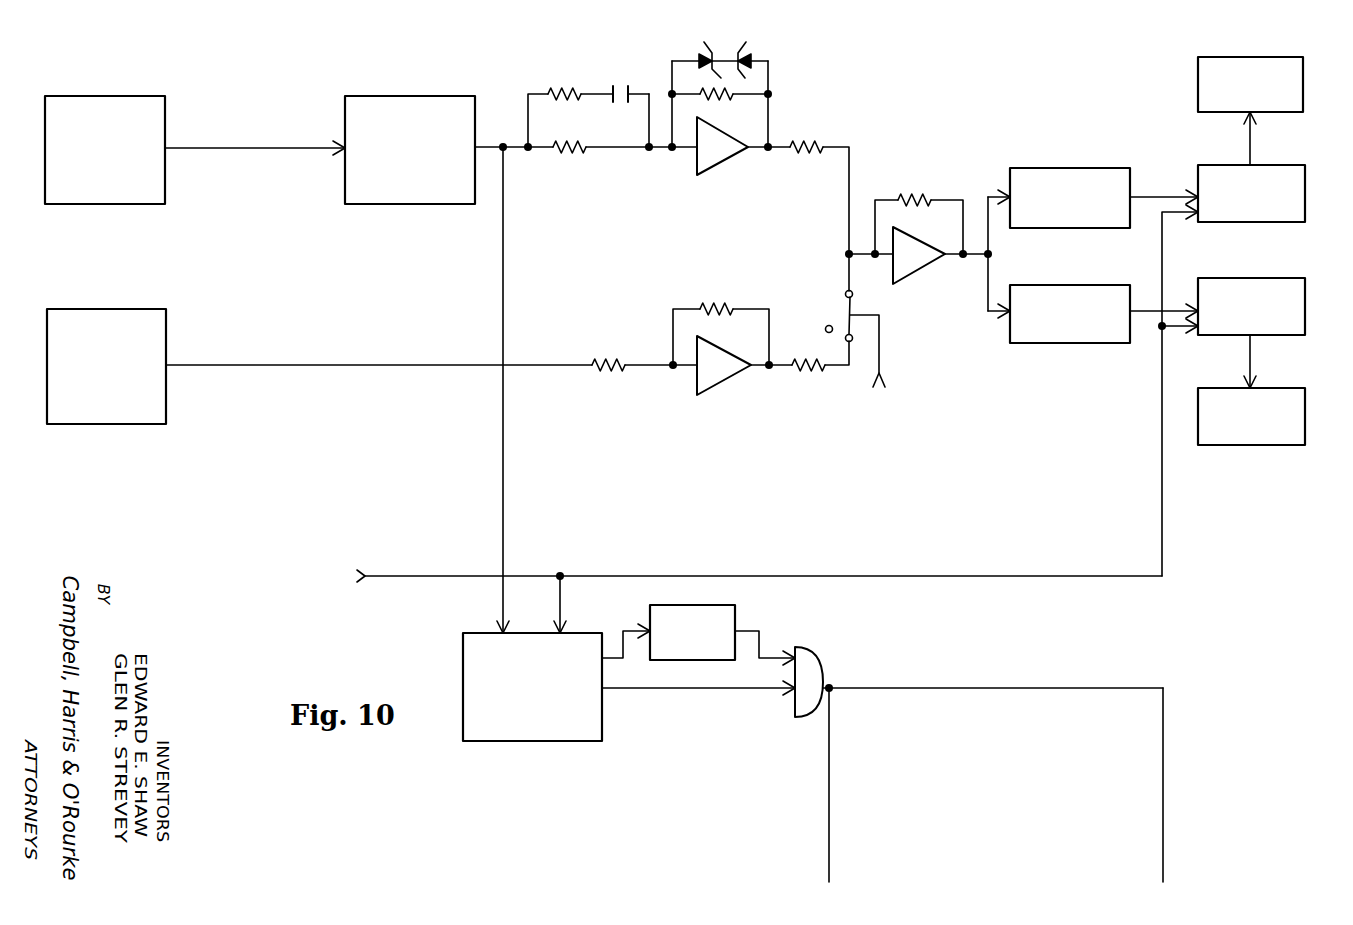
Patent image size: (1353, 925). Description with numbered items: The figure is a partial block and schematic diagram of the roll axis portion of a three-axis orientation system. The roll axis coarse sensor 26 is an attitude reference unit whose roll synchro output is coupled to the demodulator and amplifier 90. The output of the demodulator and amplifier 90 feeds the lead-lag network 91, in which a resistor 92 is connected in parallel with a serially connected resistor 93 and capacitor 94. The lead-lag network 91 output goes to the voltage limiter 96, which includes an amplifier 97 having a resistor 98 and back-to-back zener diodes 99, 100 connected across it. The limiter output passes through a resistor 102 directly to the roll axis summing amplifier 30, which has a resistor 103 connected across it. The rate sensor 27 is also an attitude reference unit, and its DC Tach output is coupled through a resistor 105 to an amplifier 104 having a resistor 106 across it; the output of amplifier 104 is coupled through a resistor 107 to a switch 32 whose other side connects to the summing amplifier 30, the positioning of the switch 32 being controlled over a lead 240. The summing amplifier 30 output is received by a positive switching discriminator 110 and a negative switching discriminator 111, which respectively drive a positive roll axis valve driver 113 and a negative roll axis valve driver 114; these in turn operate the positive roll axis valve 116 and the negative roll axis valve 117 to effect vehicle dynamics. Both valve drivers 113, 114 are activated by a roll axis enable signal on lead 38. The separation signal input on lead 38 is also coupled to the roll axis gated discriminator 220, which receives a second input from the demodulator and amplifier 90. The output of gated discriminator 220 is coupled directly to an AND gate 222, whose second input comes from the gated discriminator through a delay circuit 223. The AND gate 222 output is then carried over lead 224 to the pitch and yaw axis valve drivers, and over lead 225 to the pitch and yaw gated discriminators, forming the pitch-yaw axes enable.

The roll axis coarse sensor 26 is at (152, 93).
The rate sensor 27 is at (152, 307).
The demodulator and amplifier 90 is at (472, 93).
The lead-lag network 91 is at (594, 90).
The resistor 92 is at (566, 156).
The resistor 93 is at (554, 87).
The capacitor 94 is at (627, 87).
The voltage limiter 96 is at (719, 41).
The amplifier 97 is at (740, 152).
The resistor 98 is at (715, 101).
The zener diode 99 is at (703, 44).
The zener diode 100 is at (729, 10).
The resistor 102 is at (790, 140).
The resistor 103 is at (930, 195).
The roll axis summing amplifier 30 is at (940, 262).
The switch 32 is at (838, 319).
The lead 240 is at (886, 366).
The amplifier 104 is at (738, 382).
The resistor 105 is at (636, 326).
The resistor 106 is at (742, 287).
The resistor 107 is at (800, 372).
The positive switching discriminator 110 is at (1098, 145).
The negative switching discriminator 111 is at (1103, 263).
The positive roll axis valve driver 113 is at (1219, 162).
The negative roll axis valve driver 114 is at (1234, 274).
The positive roll axis valve 116 is at (1197, 80).
The negative roll axis valve 117 is at (1224, 363).
The lead 38 is at (452, 579).
The roll axis gated discriminator 220 is at (588, 746).
The AND gate 222 is at (818, 674).
The delay circuit 223 is at (713, 605).
The lead 224 is at (1165, 872).
The lead 225 is at (838, 868).